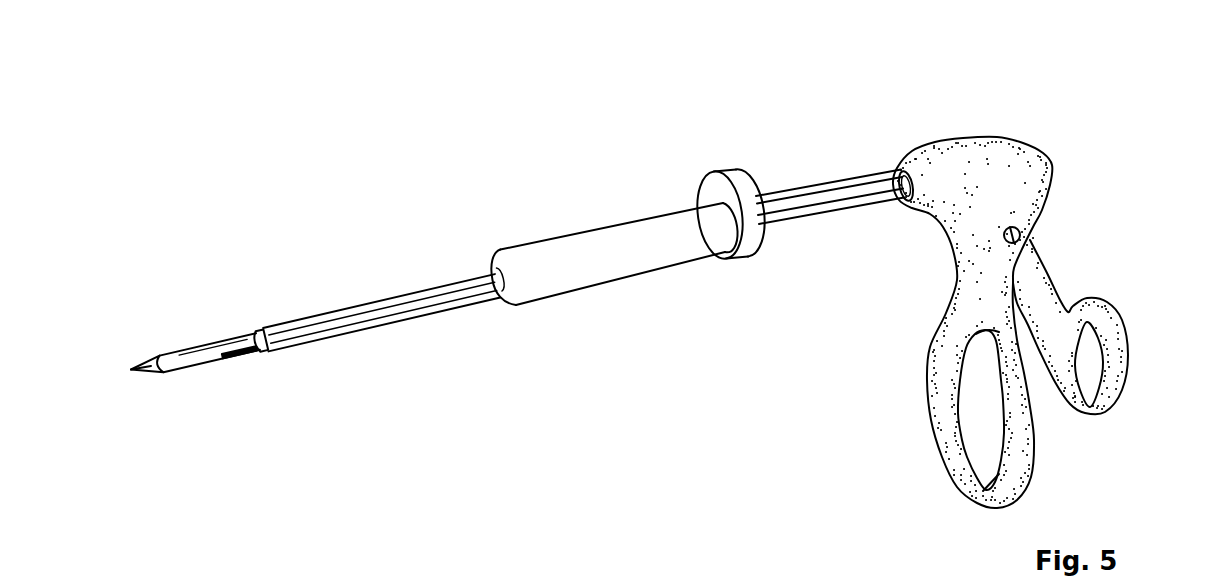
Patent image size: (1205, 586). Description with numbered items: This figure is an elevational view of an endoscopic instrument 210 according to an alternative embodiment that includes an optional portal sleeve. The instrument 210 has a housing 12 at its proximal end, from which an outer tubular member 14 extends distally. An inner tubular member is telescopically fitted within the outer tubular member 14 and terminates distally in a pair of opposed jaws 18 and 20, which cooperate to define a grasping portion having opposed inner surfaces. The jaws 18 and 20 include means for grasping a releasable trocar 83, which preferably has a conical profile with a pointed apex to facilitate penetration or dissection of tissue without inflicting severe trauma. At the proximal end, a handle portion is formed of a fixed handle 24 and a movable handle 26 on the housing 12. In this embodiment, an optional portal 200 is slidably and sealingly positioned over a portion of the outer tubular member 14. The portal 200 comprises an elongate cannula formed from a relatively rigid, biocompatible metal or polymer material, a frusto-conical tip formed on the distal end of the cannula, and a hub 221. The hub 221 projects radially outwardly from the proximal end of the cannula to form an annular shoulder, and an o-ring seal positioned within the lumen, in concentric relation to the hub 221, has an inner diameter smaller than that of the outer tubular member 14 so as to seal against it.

The housing 12 is at (1053, 159).
The outer tubular member 14 is at (398, 292).
The jaw 18 is at (222, 336).
The jaw 20 is at (228, 363).
The fixed handle 24 is at (928, 403).
The movable handle 26 is at (1100, 298).
The releasable trocar 83 is at (152, 365).
The portal 200 is at (630, 221).
The instrument 210 is at (1043, 135).
The hub 221 is at (738, 173).